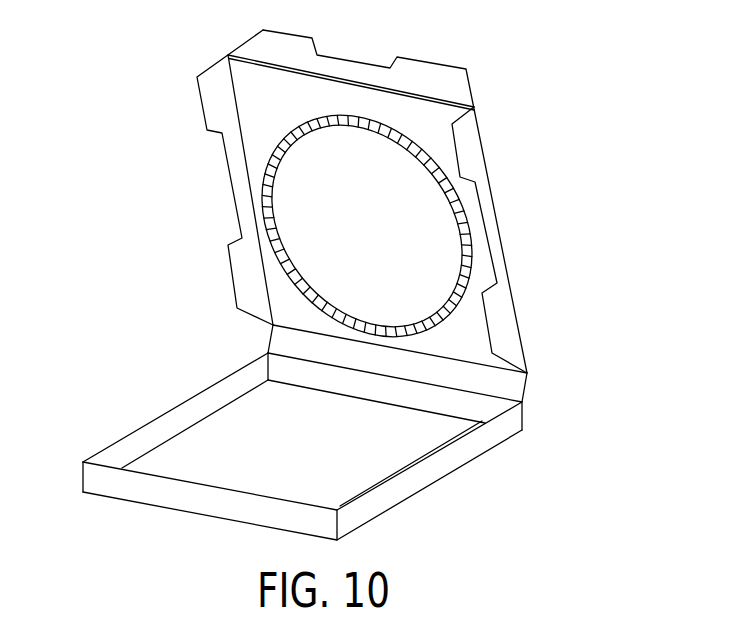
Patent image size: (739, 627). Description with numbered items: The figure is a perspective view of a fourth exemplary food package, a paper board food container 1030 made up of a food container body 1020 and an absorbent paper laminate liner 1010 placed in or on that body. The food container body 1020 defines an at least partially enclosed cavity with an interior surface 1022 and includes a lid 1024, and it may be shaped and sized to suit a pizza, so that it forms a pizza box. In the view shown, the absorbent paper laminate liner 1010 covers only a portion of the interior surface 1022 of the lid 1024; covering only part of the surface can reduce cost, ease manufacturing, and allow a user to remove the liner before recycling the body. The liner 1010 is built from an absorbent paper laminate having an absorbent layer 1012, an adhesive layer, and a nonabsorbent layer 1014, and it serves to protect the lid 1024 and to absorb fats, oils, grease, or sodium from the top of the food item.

The absorbent paper laminate liner 1010 is at (441, 201).
The absorbent layer 1012 is at (348, 148).
The nonabsorbent layer 1014 is at (420, 147).
The food container body 1020 is at (546, 412).
The interior surface 1022 is at (250, 107).
The lid 1024 is at (473, 313).
The paper board food container 1030 is at (111, 173).